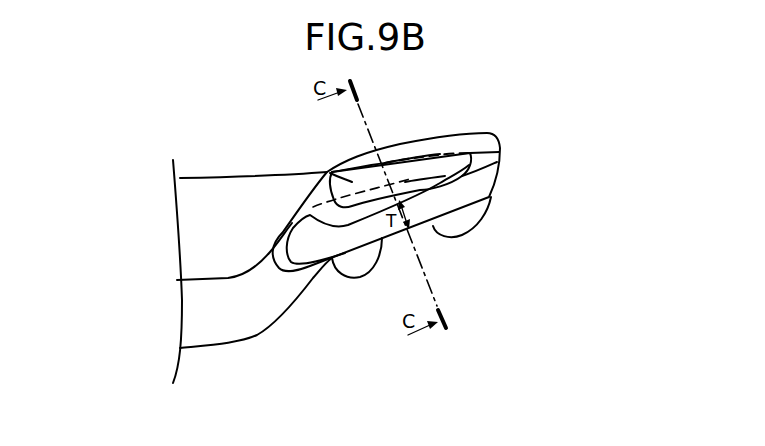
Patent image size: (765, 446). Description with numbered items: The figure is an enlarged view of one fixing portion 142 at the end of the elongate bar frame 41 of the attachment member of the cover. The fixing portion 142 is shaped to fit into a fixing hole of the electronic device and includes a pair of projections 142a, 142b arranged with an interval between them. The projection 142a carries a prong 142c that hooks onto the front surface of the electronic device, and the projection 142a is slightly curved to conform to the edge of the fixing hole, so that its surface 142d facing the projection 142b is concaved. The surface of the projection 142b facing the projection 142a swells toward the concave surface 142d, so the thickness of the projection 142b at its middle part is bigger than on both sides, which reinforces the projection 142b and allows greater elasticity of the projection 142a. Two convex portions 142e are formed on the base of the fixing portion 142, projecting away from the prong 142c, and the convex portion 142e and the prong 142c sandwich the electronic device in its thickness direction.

The frame 41 is at (213, 193).
The fixing portion 142 is at (515, 130).
The projection 142a is at (395, 178).
The projection 142b is at (480, 168).
The prong 142c is at (336, 172).
The concave surface 142d is at (406, 182).
The convex portion 142e is at (368, 252).